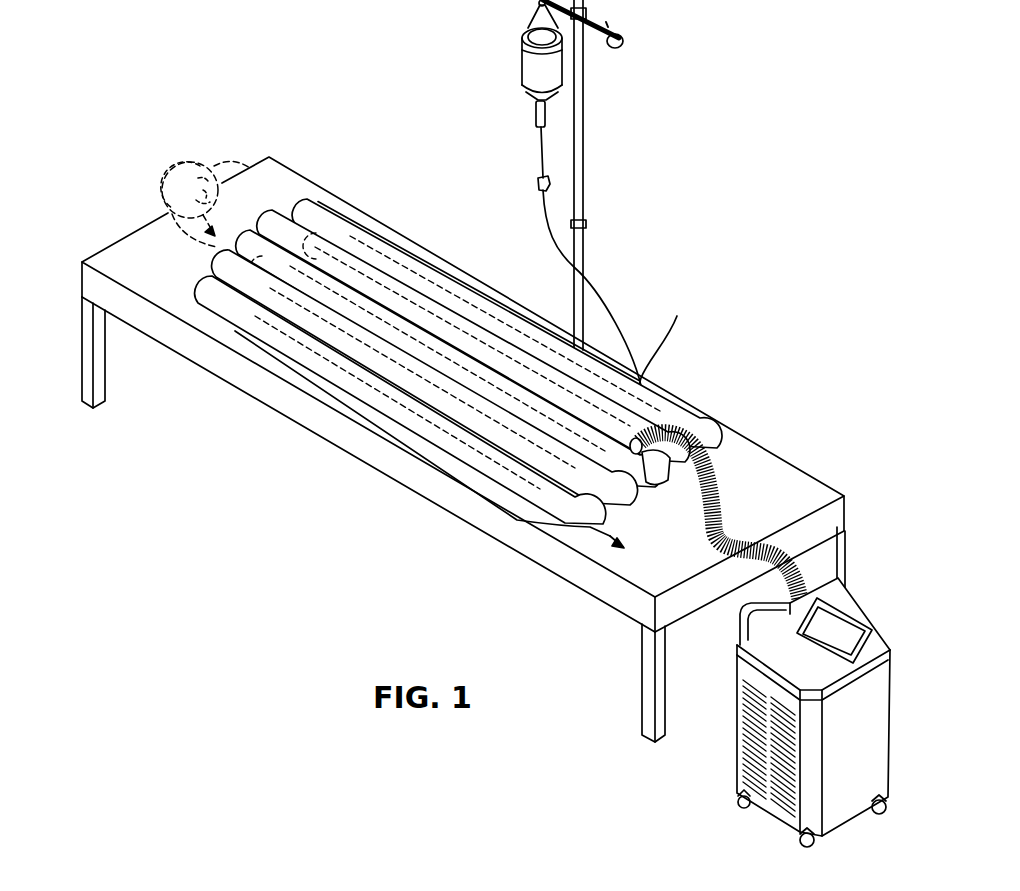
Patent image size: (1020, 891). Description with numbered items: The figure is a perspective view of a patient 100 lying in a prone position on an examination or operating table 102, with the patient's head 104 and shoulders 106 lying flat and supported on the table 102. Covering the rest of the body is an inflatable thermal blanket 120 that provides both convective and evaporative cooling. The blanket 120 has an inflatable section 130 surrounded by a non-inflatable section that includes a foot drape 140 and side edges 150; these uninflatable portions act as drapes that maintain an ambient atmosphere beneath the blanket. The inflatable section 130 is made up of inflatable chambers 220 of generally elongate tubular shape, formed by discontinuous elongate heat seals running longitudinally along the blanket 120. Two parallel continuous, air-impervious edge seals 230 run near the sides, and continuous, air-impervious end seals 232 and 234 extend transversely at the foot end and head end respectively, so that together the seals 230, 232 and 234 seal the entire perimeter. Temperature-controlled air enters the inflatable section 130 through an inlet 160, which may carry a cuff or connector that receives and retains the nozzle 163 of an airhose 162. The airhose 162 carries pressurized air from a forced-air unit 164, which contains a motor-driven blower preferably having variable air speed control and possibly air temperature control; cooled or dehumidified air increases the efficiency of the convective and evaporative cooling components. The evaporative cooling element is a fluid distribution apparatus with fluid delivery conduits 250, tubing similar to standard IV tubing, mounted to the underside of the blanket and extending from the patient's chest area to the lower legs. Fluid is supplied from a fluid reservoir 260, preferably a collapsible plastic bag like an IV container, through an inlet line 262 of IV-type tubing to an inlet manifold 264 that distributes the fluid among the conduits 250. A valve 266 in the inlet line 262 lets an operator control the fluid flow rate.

The patient 100 is at (198, 153).
The table 102 is at (145, 243).
The head 104 is at (165, 162).
The shoulders 106 is at (273, 203).
The inflatable thermal blanket 120 is at (349, 188).
The inflatable section 130 is at (312, 362).
The foot drape 140 is at (517, 520).
The side edges 150 is at (362, 412).
The inlet 160 is at (662, 483).
The airhose 162 is at (725, 505).
The nozzle 163 is at (645, 437).
The forced-air unit 164 is at (737, 775).
The inflatable chambers 220 is at (467, 327).
The edge seals 230 is at (443, 472).
The foot end seal 232 is at (568, 550).
The head end seal 234 is at (193, 300).
The fluid delivery conduits 250 is at (372, 283).
The fluid reservoir 260 is at (522, 65).
The inlet line 262 is at (597, 282).
The inlet manifold 264 is at (667, 365).
The valve 266 is at (538, 185).